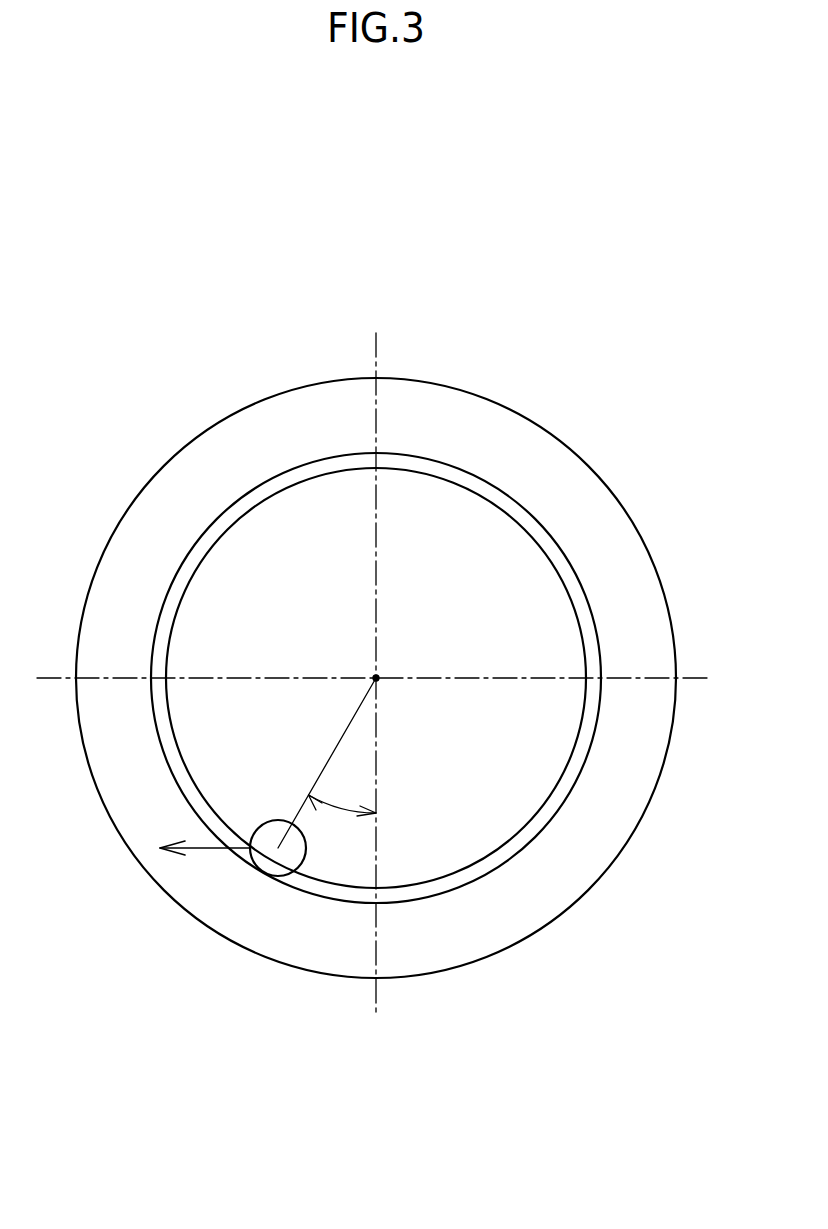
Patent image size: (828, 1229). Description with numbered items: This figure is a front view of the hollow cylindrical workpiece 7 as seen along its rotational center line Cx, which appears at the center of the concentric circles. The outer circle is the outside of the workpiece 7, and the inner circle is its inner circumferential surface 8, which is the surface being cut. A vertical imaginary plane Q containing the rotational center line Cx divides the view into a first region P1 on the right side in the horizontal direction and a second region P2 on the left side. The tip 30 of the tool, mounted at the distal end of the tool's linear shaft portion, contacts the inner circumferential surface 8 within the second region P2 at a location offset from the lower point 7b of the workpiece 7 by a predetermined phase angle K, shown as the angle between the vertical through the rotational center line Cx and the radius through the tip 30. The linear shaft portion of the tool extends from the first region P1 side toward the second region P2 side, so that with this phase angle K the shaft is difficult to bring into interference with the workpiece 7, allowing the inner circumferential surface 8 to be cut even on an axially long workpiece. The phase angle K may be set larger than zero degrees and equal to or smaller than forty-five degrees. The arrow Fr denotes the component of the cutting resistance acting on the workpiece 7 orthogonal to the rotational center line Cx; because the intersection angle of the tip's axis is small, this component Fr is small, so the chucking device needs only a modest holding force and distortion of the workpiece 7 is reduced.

The workpiece 7 is at (615, 492).
The lower point of the workpiece 7b is at (380, 893).
The inner circumferential surface 8 is at (475, 872).
The tip 30 is at (263, 822).
The vertical imaginary plane Q is at (378, 352).
The rotational center line Cx is at (378, 672).
The cutting resistance component orthogonal to the rotational center line Fr is at (203, 850).
The phase angle K is at (343, 823).
The first region P1 is at (495, 768).
The second region P2 is at (285, 768).